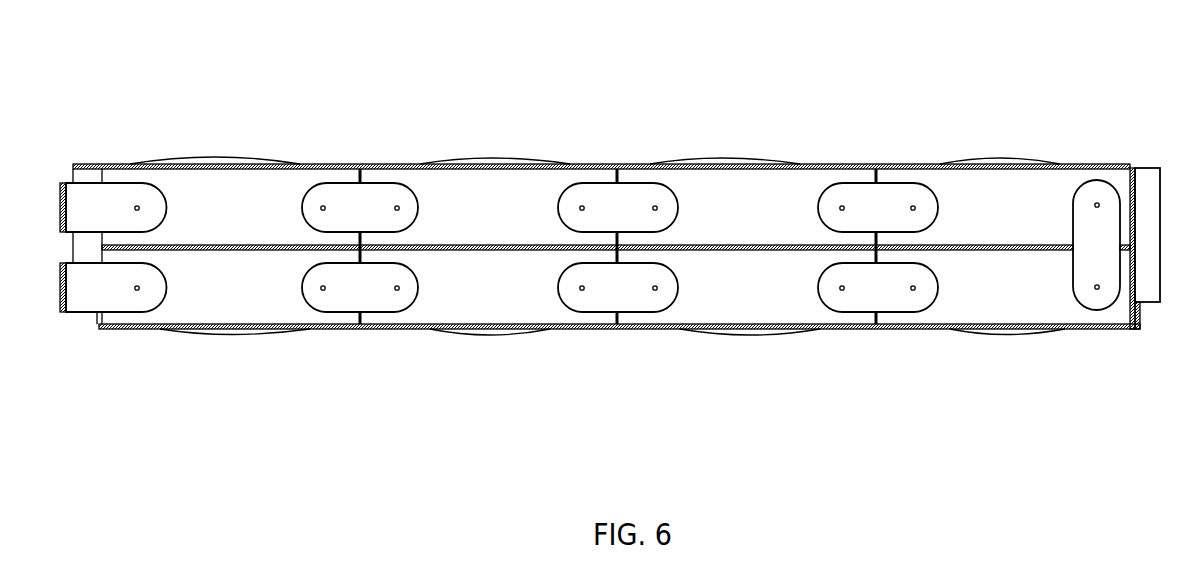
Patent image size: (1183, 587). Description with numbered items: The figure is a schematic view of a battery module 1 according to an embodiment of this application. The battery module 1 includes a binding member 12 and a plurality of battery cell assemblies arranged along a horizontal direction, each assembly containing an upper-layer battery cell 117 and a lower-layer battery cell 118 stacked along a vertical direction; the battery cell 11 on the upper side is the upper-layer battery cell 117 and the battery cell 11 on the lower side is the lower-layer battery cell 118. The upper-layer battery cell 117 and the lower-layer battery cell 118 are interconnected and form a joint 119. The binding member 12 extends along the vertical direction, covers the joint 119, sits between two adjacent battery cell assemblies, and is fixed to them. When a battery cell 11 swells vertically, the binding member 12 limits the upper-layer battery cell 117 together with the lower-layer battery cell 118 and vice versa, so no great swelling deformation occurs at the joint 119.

The battery module 1 is at (681, 108).
The battery cell 11 is at (1048, 165).
The binding member 12 is at (882, 176).
The upper-layer battery cell 117 is at (770, 170).
The lower-layer battery cell 118 is at (780, 312).
The joint 119 is at (707, 247).